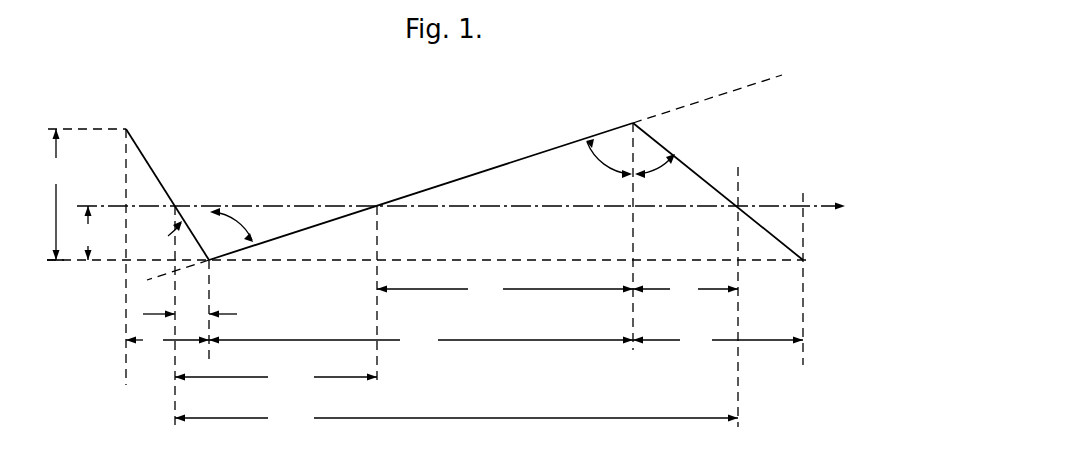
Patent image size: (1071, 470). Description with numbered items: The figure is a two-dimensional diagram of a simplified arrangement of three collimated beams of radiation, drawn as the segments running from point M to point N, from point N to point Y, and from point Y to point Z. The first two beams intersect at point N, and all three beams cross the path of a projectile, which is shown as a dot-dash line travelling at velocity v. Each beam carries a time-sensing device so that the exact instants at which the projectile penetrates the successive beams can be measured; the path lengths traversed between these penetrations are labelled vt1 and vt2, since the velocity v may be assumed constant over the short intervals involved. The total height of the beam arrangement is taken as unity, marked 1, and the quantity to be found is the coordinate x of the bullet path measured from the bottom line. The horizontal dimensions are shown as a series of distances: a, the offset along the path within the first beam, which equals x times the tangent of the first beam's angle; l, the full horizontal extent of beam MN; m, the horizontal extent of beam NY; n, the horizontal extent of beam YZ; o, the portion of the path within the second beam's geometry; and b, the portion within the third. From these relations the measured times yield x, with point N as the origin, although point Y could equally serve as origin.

The endpoint of beam MN M is at (93, 246).
The intersection point of beams MN and NY N is at (178, 246).
The intersection point of beams NY and YZ Y is at (495, 212).
The endpoint of beam YZ Z is at (730, 244).
The velocity of the projectile v is at (468, 206).
The unit height of the beam arrangement 1 is at (55, 194).
The x coordinate of the projectile path x is at (88, 233).
The distance a is at (190, 313).
The distance l is at (167, 339).
The distance m is at (421, 339).
The distance n is at (718, 339).
The distance o is at (505, 288).
The distance b is at (685, 288).
The path length vt1 is at (276, 378).
The path length vt2 is at (456, 419).